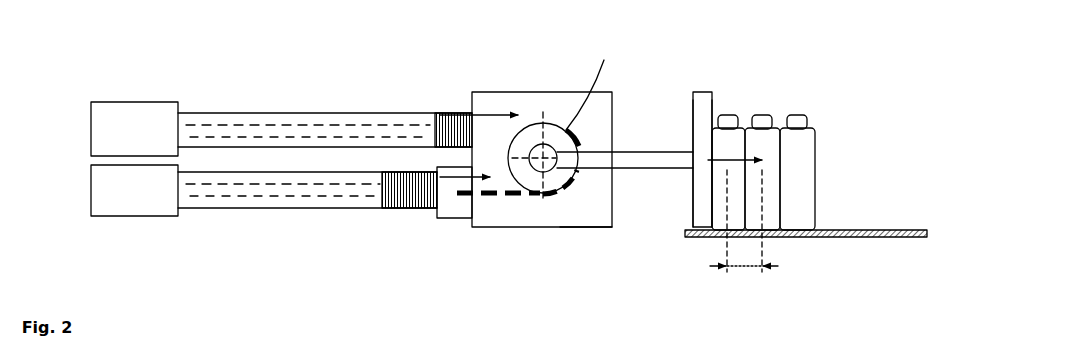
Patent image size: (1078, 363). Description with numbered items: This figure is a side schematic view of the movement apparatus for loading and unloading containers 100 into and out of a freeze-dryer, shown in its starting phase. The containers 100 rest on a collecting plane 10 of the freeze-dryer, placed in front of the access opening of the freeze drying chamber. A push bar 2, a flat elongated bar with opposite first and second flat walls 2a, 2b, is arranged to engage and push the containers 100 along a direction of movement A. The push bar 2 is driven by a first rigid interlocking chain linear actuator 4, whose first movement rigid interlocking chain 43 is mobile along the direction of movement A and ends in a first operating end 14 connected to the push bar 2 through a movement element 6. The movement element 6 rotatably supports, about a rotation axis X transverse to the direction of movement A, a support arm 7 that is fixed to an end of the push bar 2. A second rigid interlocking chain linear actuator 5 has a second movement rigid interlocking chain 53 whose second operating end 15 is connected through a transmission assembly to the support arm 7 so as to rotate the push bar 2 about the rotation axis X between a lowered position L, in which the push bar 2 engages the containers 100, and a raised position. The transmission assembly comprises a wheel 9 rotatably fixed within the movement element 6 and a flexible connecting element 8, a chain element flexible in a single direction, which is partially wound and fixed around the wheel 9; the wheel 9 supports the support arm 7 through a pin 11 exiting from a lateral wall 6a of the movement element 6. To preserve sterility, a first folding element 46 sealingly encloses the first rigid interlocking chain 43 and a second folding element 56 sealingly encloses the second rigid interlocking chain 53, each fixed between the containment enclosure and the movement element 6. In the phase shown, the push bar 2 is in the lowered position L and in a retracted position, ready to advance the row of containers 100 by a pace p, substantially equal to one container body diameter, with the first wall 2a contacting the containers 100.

The push bar 2 is at (705, 102).
The first wall 2a is at (713, 101).
The second wall 2b is at (692, 116).
The first rigid interlocking chain linear actuator 4 is at (172, 92).
The second rigid interlocking chain linear actuator 5 is at (174, 222).
The movement element 6 is at (522, 100).
The lateral wall 6a is at (572, 215).
The support arm 7 is at (647, 160).
The flexible connecting element 8 is at (497, 196).
The wheel 9 is at (555, 126).
The collecting plane 10 is at (833, 238).
The pin 11 is at (547, 152).
The first operating end 14 is at (462, 115).
The second operating end 15 is at (445, 222).
The first movement rigid interlocking chain 43 is at (404, 118).
The first folding element 46 is at (262, 113).
The second movement rigid interlocking chain 53 is at (338, 208).
The second folding element 56 is at (262, 208).
The containers 100 is at (806, 162).
The direction of movement A is at (904, 63).
The lowered position L is at (668, 240).
The rotation axis X is at (531, 176).
The pace p is at (743, 227).